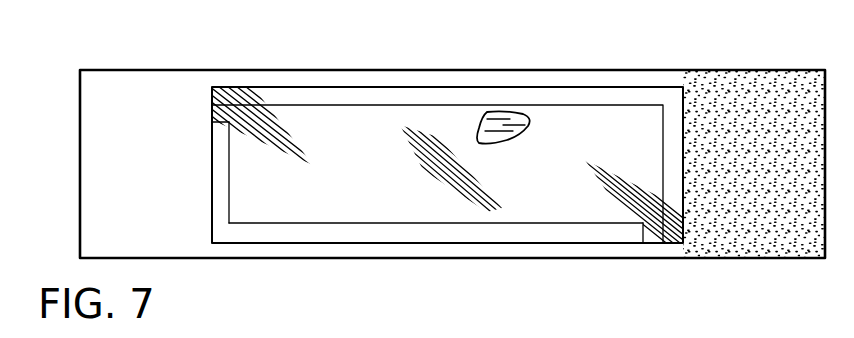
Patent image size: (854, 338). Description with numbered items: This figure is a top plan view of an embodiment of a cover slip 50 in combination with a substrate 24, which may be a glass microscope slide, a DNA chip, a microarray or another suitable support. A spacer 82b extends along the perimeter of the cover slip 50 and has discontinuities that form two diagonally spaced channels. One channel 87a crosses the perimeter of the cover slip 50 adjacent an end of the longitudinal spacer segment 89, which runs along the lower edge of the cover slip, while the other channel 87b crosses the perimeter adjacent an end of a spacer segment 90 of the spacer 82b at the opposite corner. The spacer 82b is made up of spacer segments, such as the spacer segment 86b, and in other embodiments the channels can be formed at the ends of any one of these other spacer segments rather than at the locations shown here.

The cover slip 50 is at (452, 174).
The substrate 24 is at (557, 259).
The spacer 82b is at (435, 248).
The spacer segment 90 is at (232, 193).
The longitudinal spacer segment 89 is at (373, 223).
The channel 87b is at (212, 110).
The channel 87a is at (652, 243).
The spacer segment 86b is at (503, 115).